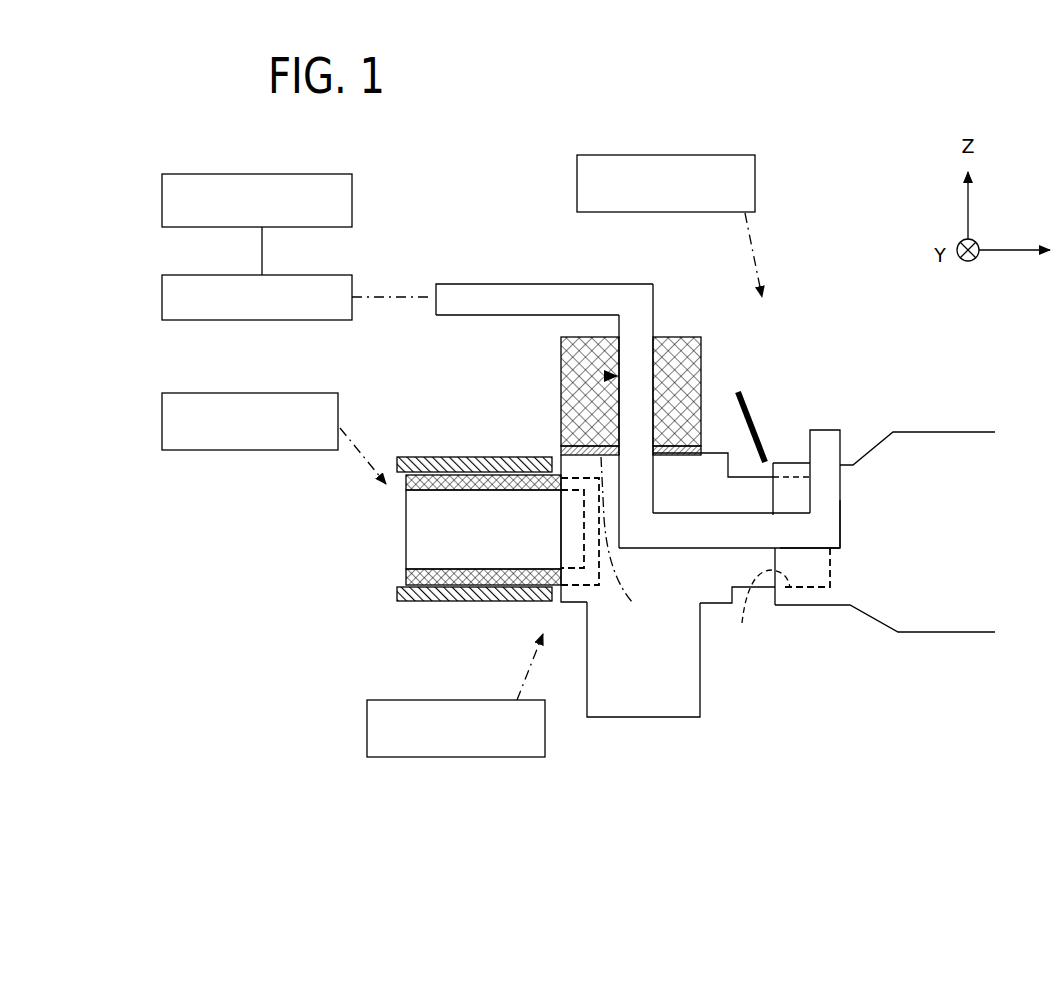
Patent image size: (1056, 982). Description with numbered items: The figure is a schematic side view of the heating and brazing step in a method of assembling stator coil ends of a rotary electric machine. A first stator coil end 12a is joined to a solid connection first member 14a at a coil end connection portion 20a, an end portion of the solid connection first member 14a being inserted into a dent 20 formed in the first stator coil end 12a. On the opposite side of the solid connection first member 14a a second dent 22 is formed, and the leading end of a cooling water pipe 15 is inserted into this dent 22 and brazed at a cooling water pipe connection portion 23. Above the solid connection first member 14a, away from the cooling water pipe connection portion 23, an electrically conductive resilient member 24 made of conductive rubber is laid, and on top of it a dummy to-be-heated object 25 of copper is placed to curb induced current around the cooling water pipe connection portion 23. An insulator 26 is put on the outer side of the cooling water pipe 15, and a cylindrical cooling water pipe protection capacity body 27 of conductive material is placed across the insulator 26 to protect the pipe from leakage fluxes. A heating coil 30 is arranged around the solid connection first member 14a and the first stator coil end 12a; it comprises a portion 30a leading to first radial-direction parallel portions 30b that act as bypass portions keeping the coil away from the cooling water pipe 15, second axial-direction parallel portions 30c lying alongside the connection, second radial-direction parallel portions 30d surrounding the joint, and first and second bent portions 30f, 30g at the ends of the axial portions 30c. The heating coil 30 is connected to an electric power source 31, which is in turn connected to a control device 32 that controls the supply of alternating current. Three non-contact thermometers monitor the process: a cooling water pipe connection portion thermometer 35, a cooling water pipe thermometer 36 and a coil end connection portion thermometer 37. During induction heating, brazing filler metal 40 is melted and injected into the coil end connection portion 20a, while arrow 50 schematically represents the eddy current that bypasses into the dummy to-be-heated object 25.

The first stator coil end 12a is at (925, 612).
The solid connection first member 14a is at (695, 670).
The cooling water pipe 15 is at (412, 545).
The dent 20 is at (780, 600).
The coil end connection portion 20a is at (767, 612).
The dent 22 is at (525, 603).
The cooling water pipe connection portion 23 is at (556, 590).
The electrically conductive resilient member 24 is at (560, 450).
The dummy to-be-heated object 25 is at (560, 368).
The insulator 26 is at (405, 580).
The cooling water pipe protection capacity body 27 is at (395, 595).
The heating coil 30 is at (508, 244).
The arm portion of heater 30a is at (568, 284).
The first radial-direction parallel portions 30b is at (645, 327).
The second axial-direction parallel portions 30c is at (660, 548).
The second radial-direction parallel portions 30d is at (830, 453).
The first bent portions 30f is at (828, 528).
The second bent portions 30g is at (645, 523).
The electric power source 31 is at (343, 275).
The control device 32 is at (352, 197).
The cooling water pipe connection portion thermometer 35 is at (367, 730).
The cooling water pipe thermometer 36 is at (322, 393).
The coil end connection portion thermometer 37 is at (755, 181).
The brazing filler metal 40 is at (752, 413).
The arrow 50 is at (632, 537).